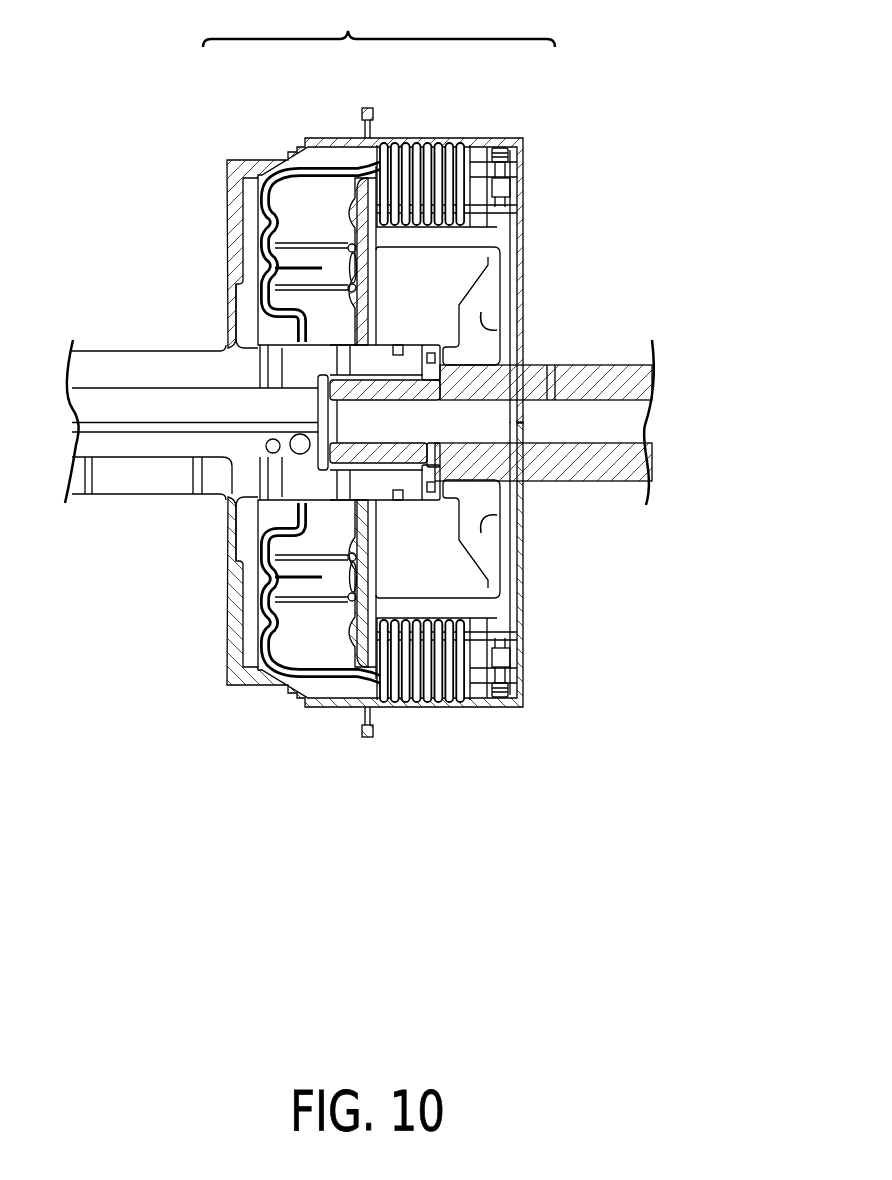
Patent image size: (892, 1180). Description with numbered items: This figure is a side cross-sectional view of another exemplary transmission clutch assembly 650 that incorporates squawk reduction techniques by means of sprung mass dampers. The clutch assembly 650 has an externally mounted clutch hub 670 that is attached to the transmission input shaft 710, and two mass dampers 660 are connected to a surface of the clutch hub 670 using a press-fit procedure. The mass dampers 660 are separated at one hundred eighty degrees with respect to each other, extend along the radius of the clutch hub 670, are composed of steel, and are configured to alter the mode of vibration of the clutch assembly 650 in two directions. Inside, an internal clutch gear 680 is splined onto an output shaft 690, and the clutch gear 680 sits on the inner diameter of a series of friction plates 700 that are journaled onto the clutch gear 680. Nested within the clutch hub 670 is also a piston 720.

The transmission clutch assembly 650 is at (379, 23).
The mass dampers 660 is at (374, 113).
The clutch hub 670 is at (493, 142).
The internal clutch gear 680 is at (497, 328).
The output shaft 690 is at (590, 375).
The friction plates 700 is at (433, 213).
The transmission input shaft 710 is at (127, 363).
The piston 720 is at (272, 184).